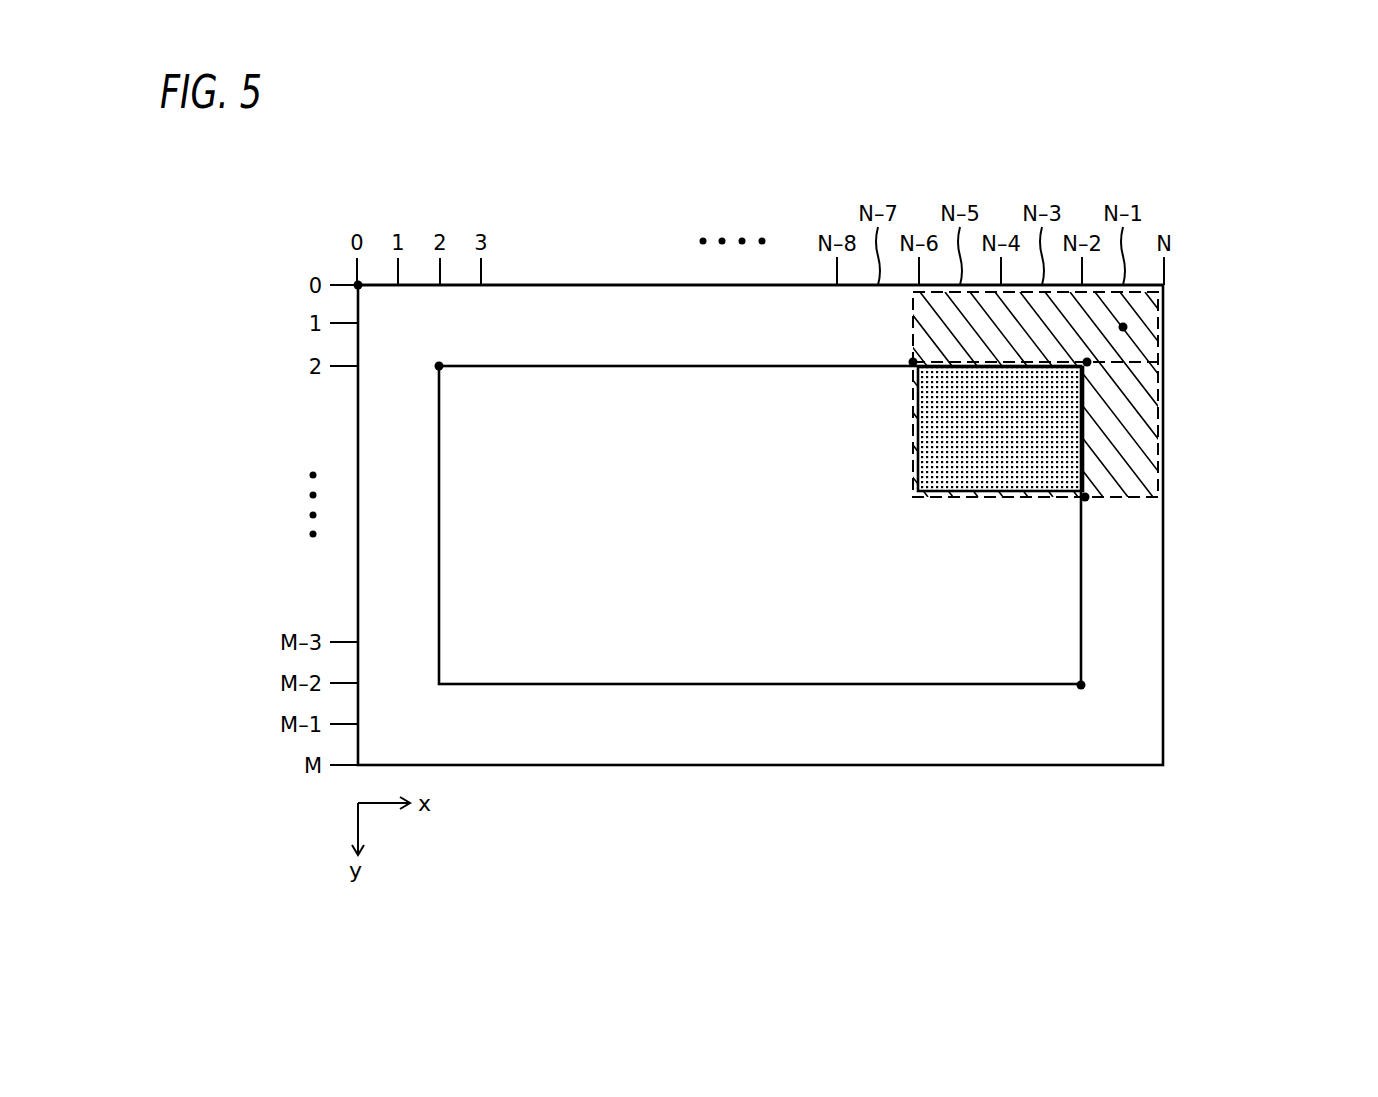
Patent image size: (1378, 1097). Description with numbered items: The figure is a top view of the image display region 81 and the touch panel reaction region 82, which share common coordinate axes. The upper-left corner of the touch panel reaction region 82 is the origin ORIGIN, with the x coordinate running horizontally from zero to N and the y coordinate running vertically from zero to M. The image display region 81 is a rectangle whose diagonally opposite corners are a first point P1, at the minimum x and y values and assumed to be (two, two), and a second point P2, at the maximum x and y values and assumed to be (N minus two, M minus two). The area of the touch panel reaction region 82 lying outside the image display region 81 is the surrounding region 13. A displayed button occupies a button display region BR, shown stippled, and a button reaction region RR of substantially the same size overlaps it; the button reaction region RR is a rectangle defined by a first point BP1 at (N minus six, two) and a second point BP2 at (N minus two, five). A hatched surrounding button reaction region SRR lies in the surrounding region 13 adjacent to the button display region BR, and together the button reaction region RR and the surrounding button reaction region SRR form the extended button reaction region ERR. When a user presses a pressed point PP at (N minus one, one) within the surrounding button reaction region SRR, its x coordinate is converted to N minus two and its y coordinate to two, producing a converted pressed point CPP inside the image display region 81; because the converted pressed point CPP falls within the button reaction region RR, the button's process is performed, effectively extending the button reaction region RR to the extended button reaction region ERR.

The surrounding region 13 is at (1117, 628).
The image display region 81 is at (652, 363).
The touch panel reaction region 82 is at (590, 282).
The origin ORIGIN is at (357, 284).
The first point P1 is at (441, 366).
The second point P2 is at (1081, 685).
The first point of button reaction region BP1 is at (911, 362).
The second point of button reaction region BP2 is at (1085, 497).
The pressed point PP is at (1123, 327).
The converted pressed point CPP is at (1087, 362).
The extended button reaction region ERR is at (1270, 393).
The surrounding button reaction region SRR is at (1163, 408).
The button reaction region RR is at (1087, 438).
The button display region BR is at (982, 462).